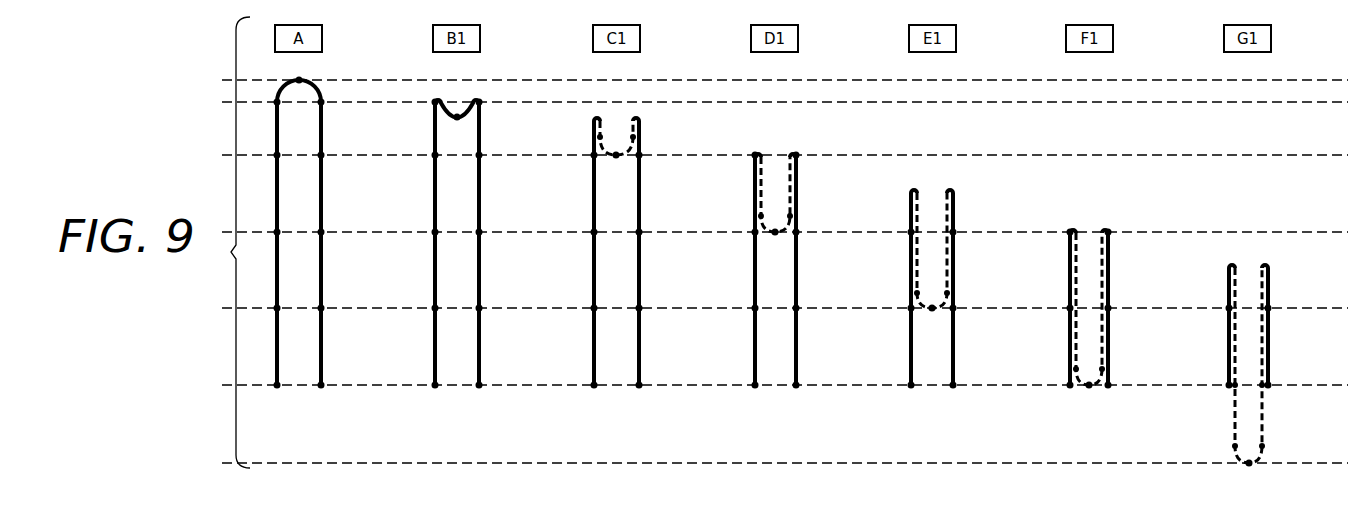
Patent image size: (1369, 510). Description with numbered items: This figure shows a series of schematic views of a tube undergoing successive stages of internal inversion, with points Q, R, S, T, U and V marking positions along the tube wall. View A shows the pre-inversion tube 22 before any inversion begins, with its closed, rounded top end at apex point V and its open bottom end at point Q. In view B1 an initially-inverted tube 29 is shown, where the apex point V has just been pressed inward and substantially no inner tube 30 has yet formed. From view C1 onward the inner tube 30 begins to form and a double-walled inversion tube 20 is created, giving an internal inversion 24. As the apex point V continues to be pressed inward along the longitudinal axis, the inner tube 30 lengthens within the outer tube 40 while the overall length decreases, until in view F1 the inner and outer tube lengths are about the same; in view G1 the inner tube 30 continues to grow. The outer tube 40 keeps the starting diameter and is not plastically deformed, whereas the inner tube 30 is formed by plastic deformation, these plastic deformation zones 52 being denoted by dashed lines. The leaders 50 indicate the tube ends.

The pre-inversion tube 22 is at (334, 76).
The initially-inverted tube 29 is at (490, 76).
The inversion tube 20 is at (970, 297).
The internal inversion 24 is at (658, 151).
The tube ends 50 is at (953, 191).
The outer tube 40 is at (910, 243).
The inner tube 30 is at (885, 250).
The plastic deformation zone 52 is at (910, 262).